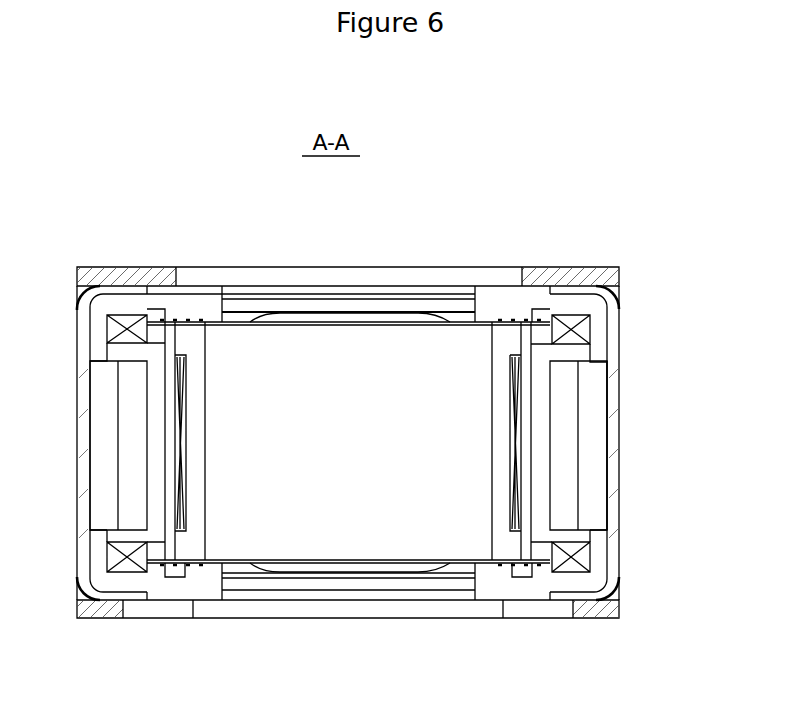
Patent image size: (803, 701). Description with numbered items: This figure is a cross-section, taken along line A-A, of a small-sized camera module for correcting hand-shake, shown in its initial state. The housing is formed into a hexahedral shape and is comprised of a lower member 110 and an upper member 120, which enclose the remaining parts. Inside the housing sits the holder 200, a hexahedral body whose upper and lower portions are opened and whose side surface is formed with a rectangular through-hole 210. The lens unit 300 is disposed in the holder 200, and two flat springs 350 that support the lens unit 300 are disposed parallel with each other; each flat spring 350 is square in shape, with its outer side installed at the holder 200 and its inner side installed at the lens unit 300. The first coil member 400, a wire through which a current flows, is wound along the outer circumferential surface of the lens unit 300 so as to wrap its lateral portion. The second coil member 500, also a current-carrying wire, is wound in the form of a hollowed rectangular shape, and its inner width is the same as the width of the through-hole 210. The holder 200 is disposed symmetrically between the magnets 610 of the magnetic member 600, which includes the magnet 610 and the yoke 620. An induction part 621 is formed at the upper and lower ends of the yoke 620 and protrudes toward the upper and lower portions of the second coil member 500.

The lower member 110 is at (617, 596).
The upper member 120 is at (600, 273).
The induction part 621 is at (573, 287).
The lens unit 300 is at (512, 336).
The flat spring 350 is at (233, 322).
The holder 200 is at (541, 322).
The through-hole 210 is at (540, 416).
The second coil member 500 is at (590, 327).
The first coil member 400 is at (513, 388).
The magnetic member 600 is at (416, 445).
The magnet 610 is at (600, 468).
The yoke 620 is at (612, 495).